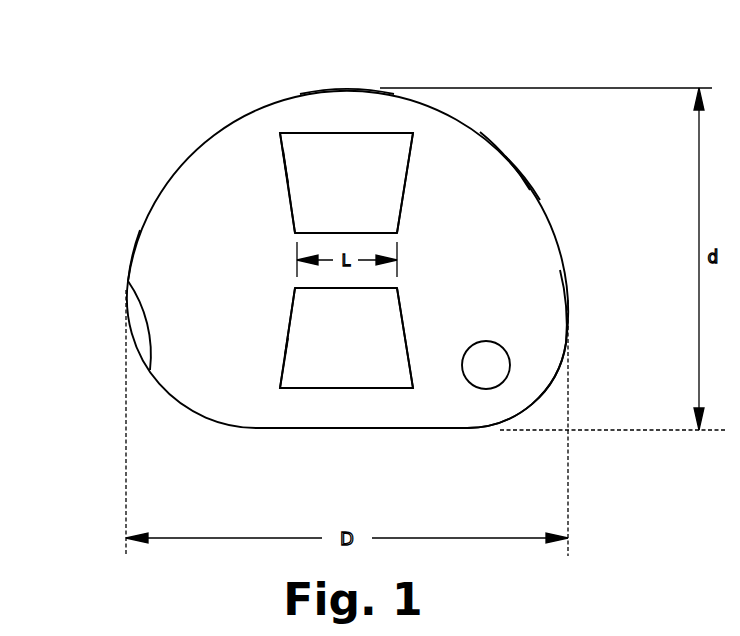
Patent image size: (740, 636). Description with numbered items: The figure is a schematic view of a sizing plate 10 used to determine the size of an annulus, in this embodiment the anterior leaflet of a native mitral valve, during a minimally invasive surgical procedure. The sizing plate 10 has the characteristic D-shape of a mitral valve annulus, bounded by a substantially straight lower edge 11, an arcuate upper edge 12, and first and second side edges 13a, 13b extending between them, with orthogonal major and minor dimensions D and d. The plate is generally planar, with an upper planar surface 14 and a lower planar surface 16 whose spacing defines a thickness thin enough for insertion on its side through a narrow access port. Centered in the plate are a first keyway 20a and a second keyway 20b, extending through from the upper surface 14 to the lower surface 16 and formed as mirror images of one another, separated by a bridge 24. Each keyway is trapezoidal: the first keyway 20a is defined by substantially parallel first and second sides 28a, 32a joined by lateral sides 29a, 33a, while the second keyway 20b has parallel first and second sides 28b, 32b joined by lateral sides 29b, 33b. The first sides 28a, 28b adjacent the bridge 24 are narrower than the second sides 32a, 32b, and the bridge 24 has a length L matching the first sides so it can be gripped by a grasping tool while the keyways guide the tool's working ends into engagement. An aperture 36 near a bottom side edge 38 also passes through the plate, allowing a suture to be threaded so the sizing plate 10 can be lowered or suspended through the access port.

The sizing plate 10 is at (293, 92).
The substantially straight lower edge 11 is at (343, 430).
The arcuate upper edge 12 is at (345, 88).
The first side edge 13a is at (125, 313).
The second side edge 13b is at (568, 313).
The upper planar surface 14 is at (510, 162).
The lower planar surface 16 is at (520, 178).
The first keyway 20a is at (413, 133).
The second keyway 20b is at (282, 388).
The bridge 24 is at (386, 245).
The first side of first keyway 28a is at (315, 234).
The first side of second keyway 28b is at (308, 288).
The lateral side of first keyway 29a is at (288, 187).
The lateral side of second keyway 29b is at (288, 343).
The second side of first keyway 32a is at (300, 133).
The second side of second keyway 32b is at (300, 388).
The lateral side of first keyway 33a is at (407, 180).
The lateral side of second keyway 33b is at (407, 347).
The aperture 36 is at (510, 362).
The bottom side edge 38 is at (543, 393).